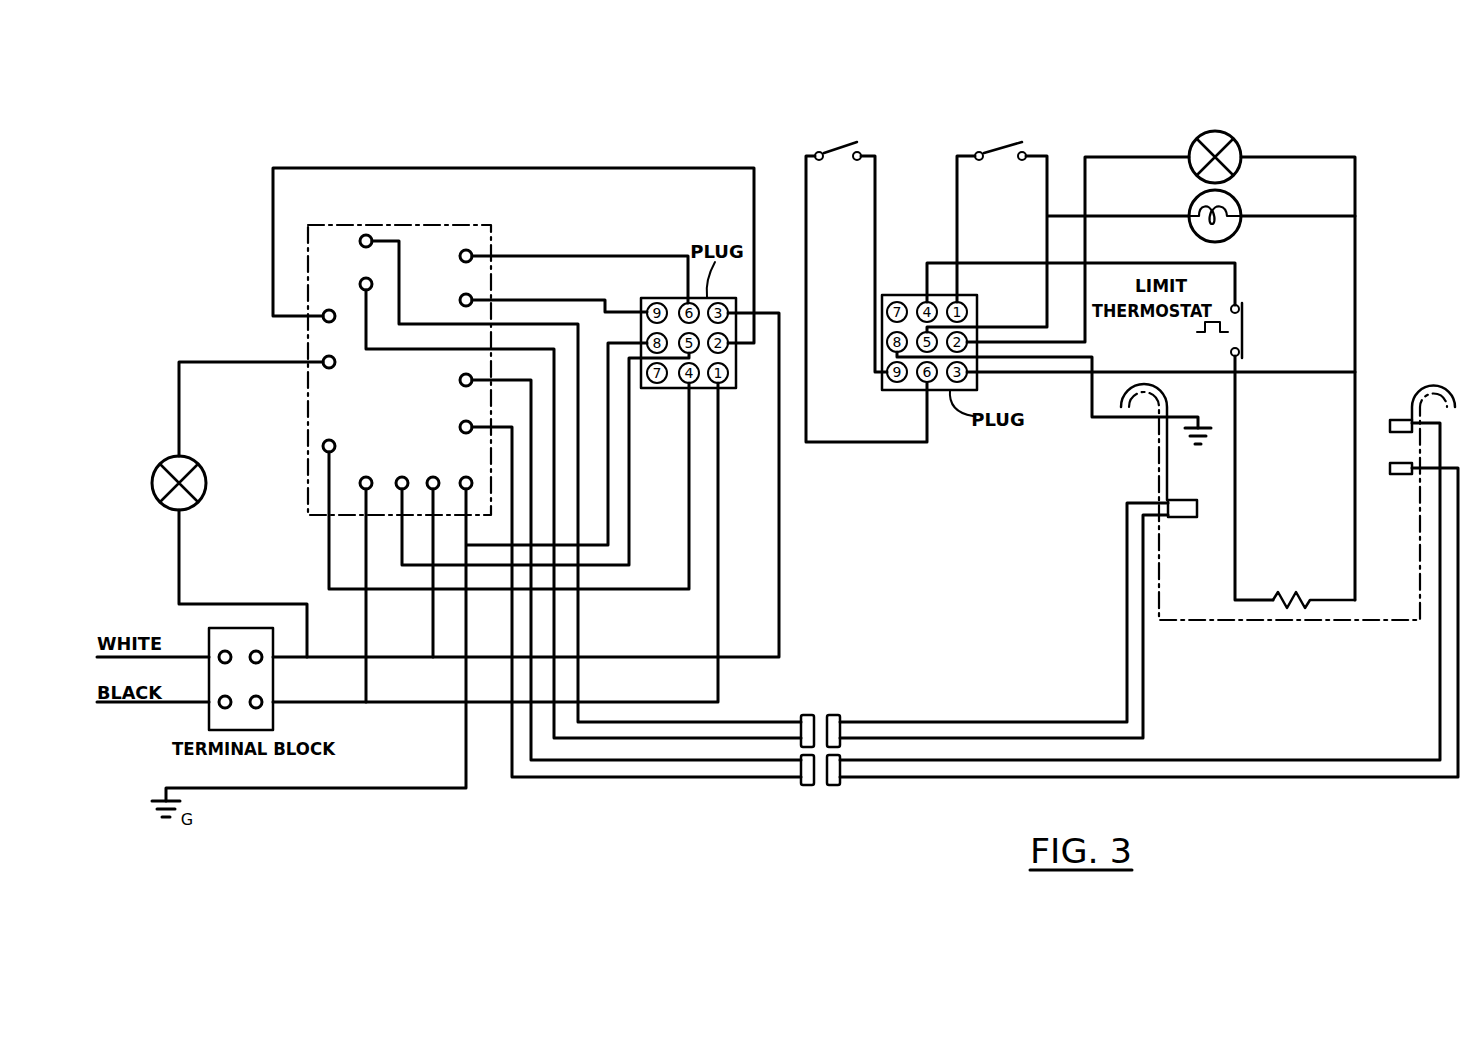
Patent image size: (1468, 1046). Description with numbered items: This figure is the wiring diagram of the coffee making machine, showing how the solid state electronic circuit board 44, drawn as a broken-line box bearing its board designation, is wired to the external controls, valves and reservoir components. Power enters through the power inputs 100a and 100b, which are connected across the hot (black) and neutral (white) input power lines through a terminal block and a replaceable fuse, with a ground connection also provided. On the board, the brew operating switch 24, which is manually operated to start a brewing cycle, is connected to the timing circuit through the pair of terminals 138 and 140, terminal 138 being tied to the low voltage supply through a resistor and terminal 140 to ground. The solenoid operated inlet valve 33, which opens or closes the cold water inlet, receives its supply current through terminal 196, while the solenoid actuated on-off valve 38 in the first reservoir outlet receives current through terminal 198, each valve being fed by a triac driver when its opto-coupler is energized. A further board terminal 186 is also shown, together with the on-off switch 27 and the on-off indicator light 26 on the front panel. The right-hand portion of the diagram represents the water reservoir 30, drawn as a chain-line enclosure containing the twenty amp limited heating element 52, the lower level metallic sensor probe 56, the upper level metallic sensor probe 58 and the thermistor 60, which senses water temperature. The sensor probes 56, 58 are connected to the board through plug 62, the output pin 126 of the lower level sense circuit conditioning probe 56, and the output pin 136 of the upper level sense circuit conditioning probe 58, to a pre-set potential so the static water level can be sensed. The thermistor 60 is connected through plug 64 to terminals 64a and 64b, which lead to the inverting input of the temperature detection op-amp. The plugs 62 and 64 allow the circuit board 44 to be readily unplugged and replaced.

The circuit board 44 is at (425, 205).
The terminal 64a is at (365, 234).
The terminal 64b is at (363, 278).
The terminal 138 is at (471, 254).
The terminal 140 is at (471, 298).
The terminal 198 is at (324, 321).
The terminal 196 is at (324, 367).
The output pin 136 is at (461, 377).
The output pin 126 is at (460, 427).
The relay terminal 186 is at (325, 442).
The power input 100a is at (366, 477).
The power input 100b is at (433, 477).
The solenoid operated valve 33 is at (163, 463).
The operating switch 24 is at (845, 146).
The on-off switch 27 is at (1005, 152).
The solenoid actuated on-off valve 38 is at (1233, 137).
The on-off indicator light 26 is at (1242, 210).
The heating element 52 is at (1293, 592).
The water reservoir 30 is at (1313, 645).
The thermistor 60 is at (1179, 505).
The upper level sensor probe 58 is at (1397, 420).
The lower level sensor probe 56 is at (1398, 474).
The plug 64 is at (826, 697).
The plug 62 is at (833, 796).